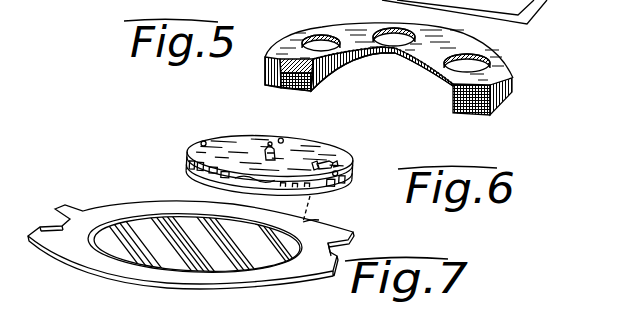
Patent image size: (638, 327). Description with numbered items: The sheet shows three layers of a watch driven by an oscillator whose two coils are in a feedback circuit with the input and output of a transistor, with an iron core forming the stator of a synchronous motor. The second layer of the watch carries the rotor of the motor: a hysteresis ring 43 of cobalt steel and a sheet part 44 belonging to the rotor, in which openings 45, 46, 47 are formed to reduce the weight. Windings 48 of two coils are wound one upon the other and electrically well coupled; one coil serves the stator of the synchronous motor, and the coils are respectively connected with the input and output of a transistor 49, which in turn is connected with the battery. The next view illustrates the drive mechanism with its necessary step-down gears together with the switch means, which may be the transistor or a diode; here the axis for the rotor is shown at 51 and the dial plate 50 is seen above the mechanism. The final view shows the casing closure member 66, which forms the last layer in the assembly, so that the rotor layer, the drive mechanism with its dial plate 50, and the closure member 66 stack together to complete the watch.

In FIG. 5, the hysteresis ring 43 is at (512, 99).
In FIG. 5, the sheet part 44 is at (503, 60).
In FIG. 5, the opening 45 is at (318, 36).
In FIG. 5, the opening 46 is at (393, 46).
In FIG. 5, the opening 47 is at (452, 70).
In FIG. 5, the windings 48 is at (302, 88).
In FIG. 6, the transistor 49 is at (328, 160).
In FIG. 6, the dial plate 50 is at (322, 190).
In FIG. 6, the axis for the rotor 51 is at (268, 143).
In FIG. 7, the casing closure member 66 is at (240, 278).